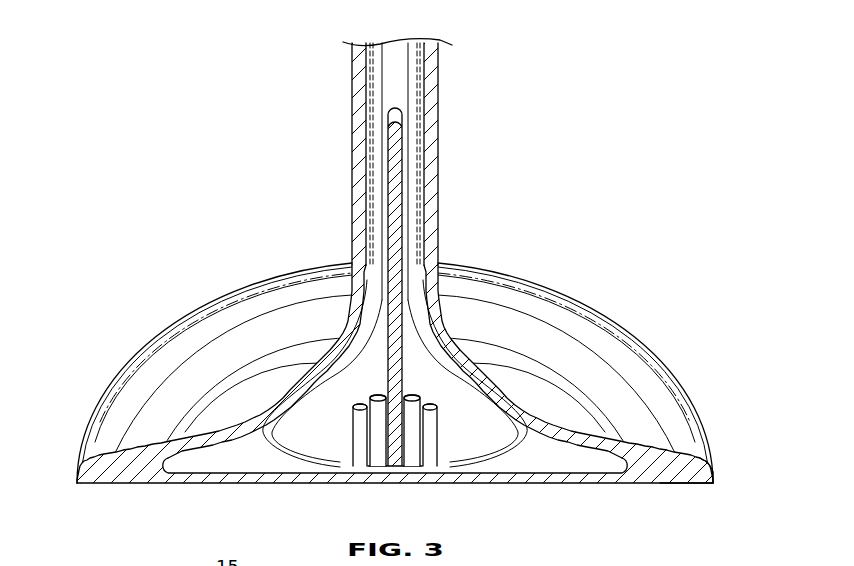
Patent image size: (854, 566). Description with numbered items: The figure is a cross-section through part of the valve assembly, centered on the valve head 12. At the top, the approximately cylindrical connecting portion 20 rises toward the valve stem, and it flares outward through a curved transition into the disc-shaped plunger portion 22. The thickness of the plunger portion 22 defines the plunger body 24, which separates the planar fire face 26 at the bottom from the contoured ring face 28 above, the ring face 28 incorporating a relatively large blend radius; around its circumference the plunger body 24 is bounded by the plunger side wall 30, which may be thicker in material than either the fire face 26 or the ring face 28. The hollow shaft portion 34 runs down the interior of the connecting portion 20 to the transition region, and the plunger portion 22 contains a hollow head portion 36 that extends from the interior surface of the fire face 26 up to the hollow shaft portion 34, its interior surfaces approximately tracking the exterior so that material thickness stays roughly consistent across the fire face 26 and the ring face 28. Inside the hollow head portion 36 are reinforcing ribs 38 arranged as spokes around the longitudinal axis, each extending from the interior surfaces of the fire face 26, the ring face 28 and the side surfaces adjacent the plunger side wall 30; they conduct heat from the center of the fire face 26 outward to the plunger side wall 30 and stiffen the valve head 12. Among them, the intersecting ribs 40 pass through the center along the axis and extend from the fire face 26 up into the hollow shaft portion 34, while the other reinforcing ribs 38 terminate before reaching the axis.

The valve head 12 is at (634, 210).
The connecting portion 20 is at (438, 238).
The plunger portion 22 is at (647, 348).
The plunger body 24 is at (663, 470).
The fire face 26 is at (575, 483).
The ring face 28 is at (254, 340).
The plunger side wall 30 is at (102, 427).
The hollow shaft portion 34 is at (410, 75).
The hollow head portion 36 is at (207, 465).
The reinforcing ribs 38 is at (378, 466).
The intersecting ribs 40 is at (400, 466).